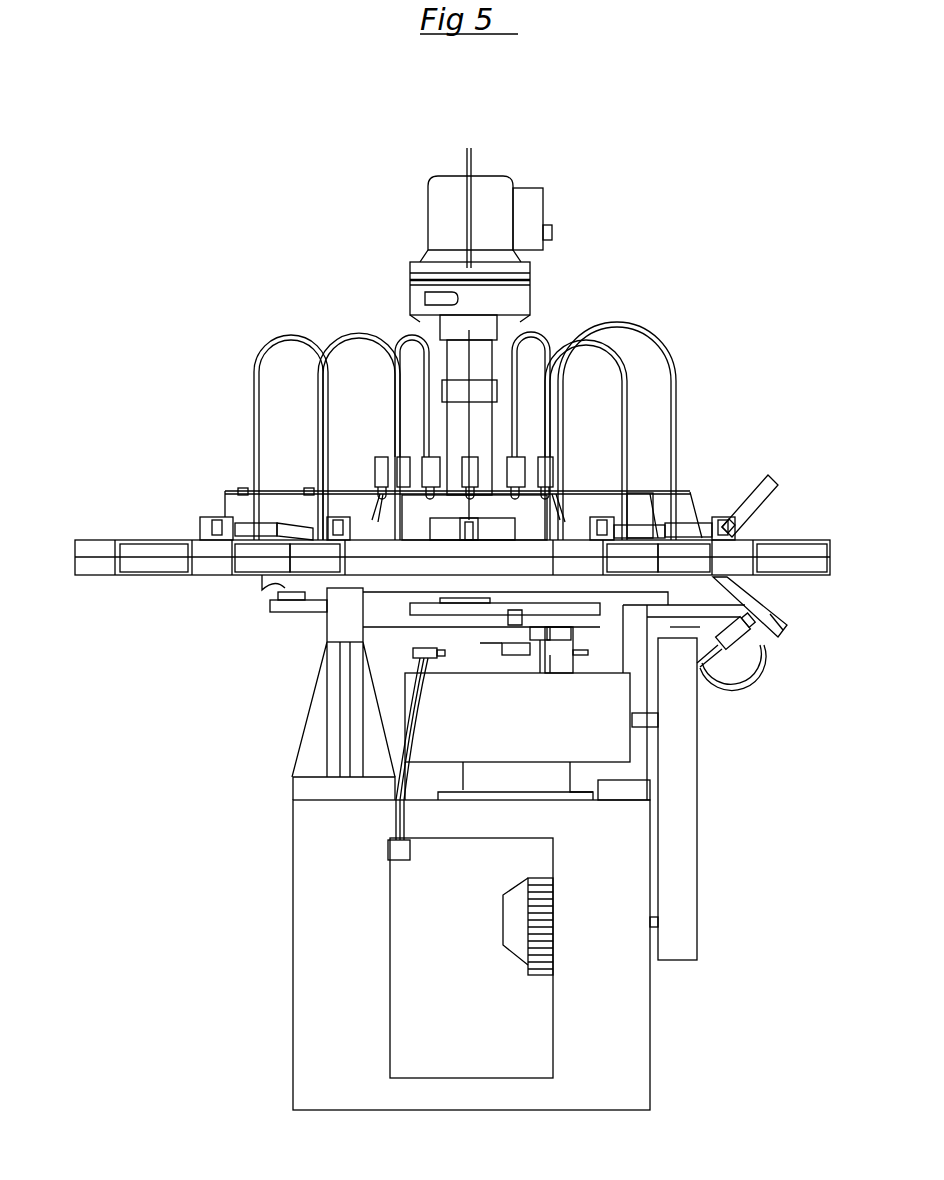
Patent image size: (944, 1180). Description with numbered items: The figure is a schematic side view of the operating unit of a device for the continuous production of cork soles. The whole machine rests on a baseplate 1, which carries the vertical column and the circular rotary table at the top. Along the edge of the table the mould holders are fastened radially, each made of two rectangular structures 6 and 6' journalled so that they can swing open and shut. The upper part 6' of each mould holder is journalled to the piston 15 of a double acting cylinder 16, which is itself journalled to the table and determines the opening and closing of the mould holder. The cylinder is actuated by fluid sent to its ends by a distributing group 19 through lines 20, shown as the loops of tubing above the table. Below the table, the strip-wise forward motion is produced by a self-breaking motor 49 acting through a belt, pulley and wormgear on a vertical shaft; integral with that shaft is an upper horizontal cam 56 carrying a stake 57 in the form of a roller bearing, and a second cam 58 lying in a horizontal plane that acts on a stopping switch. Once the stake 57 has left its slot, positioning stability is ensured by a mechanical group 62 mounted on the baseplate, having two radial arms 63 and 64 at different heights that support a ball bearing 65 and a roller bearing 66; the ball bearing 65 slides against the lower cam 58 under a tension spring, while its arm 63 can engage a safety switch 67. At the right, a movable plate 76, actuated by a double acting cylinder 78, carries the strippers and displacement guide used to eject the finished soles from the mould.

The baseplate 1 is at (313, 938).
The rectangular structure 6 is at (763, 661).
The upper part of the mould holder 6' is at (750, 489).
The piston 15 is at (250, 525).
The double acting cylinder 16 is at (645, 492).
The distributing group 19 is at (455, 355).
The line 20 is at (320, 418).
The self-breaking motor 49 is at (515, 920).
The upper horizontal cam 56 is at (481, 613).
The stake 57 is at (450, 600).
The second cam 58 is at (583, 650).
The mechanical group 62 is at (333, 718).
The radial arm 63 is at (386, 632).
The radial arm 64 is at (287, 612).
The ball bearing 65 is at (517, 650).
The roller bearing 66 is at (262, 590).
The safety switch 67 is at (537, 650).
The movable plate 76 is at (756, 620).
The double acting cylinder 78 is at (745, 668).